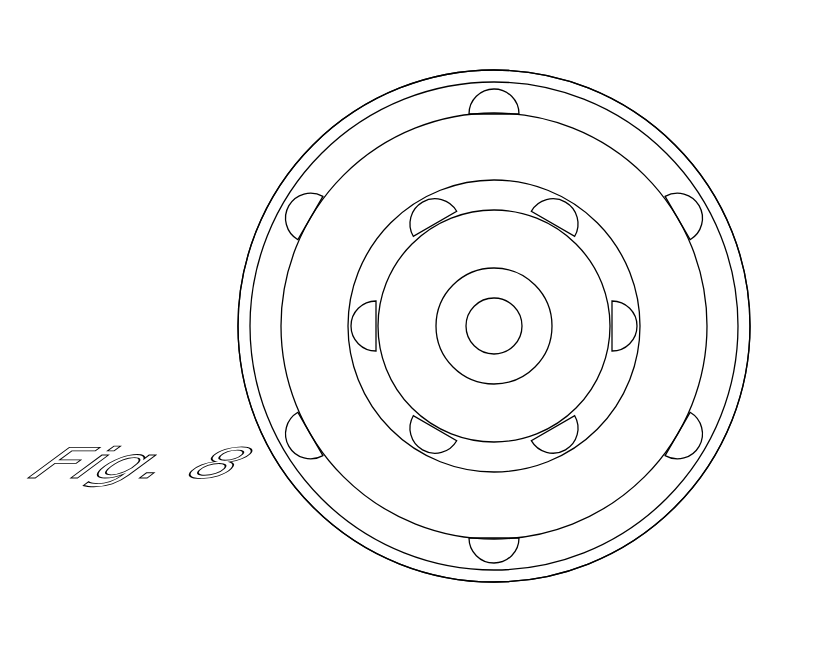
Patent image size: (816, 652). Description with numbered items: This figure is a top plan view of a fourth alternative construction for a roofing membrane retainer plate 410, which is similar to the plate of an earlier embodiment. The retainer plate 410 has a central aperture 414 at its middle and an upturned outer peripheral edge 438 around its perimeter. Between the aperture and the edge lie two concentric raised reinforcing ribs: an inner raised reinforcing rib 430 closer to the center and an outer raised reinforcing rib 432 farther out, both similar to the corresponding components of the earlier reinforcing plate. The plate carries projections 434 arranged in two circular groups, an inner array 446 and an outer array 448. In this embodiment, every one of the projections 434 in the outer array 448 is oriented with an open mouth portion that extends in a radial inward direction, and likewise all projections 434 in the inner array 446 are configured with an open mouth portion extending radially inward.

The roofing membrane retainer plate 410 is at (288, 104).
The central aperture 414 is at (508, 308).
The inner raised reinforcing rib 430 is at (435, 295).
The outer raised reinforcing rib 432 is at (369, 227).
The projections 434 is at (493, 95).
The upturned outer peripheral edge 438 is at (327, 513).
The inner array 446 is at (577, 193).
The outer array 448 is at (705, 188).